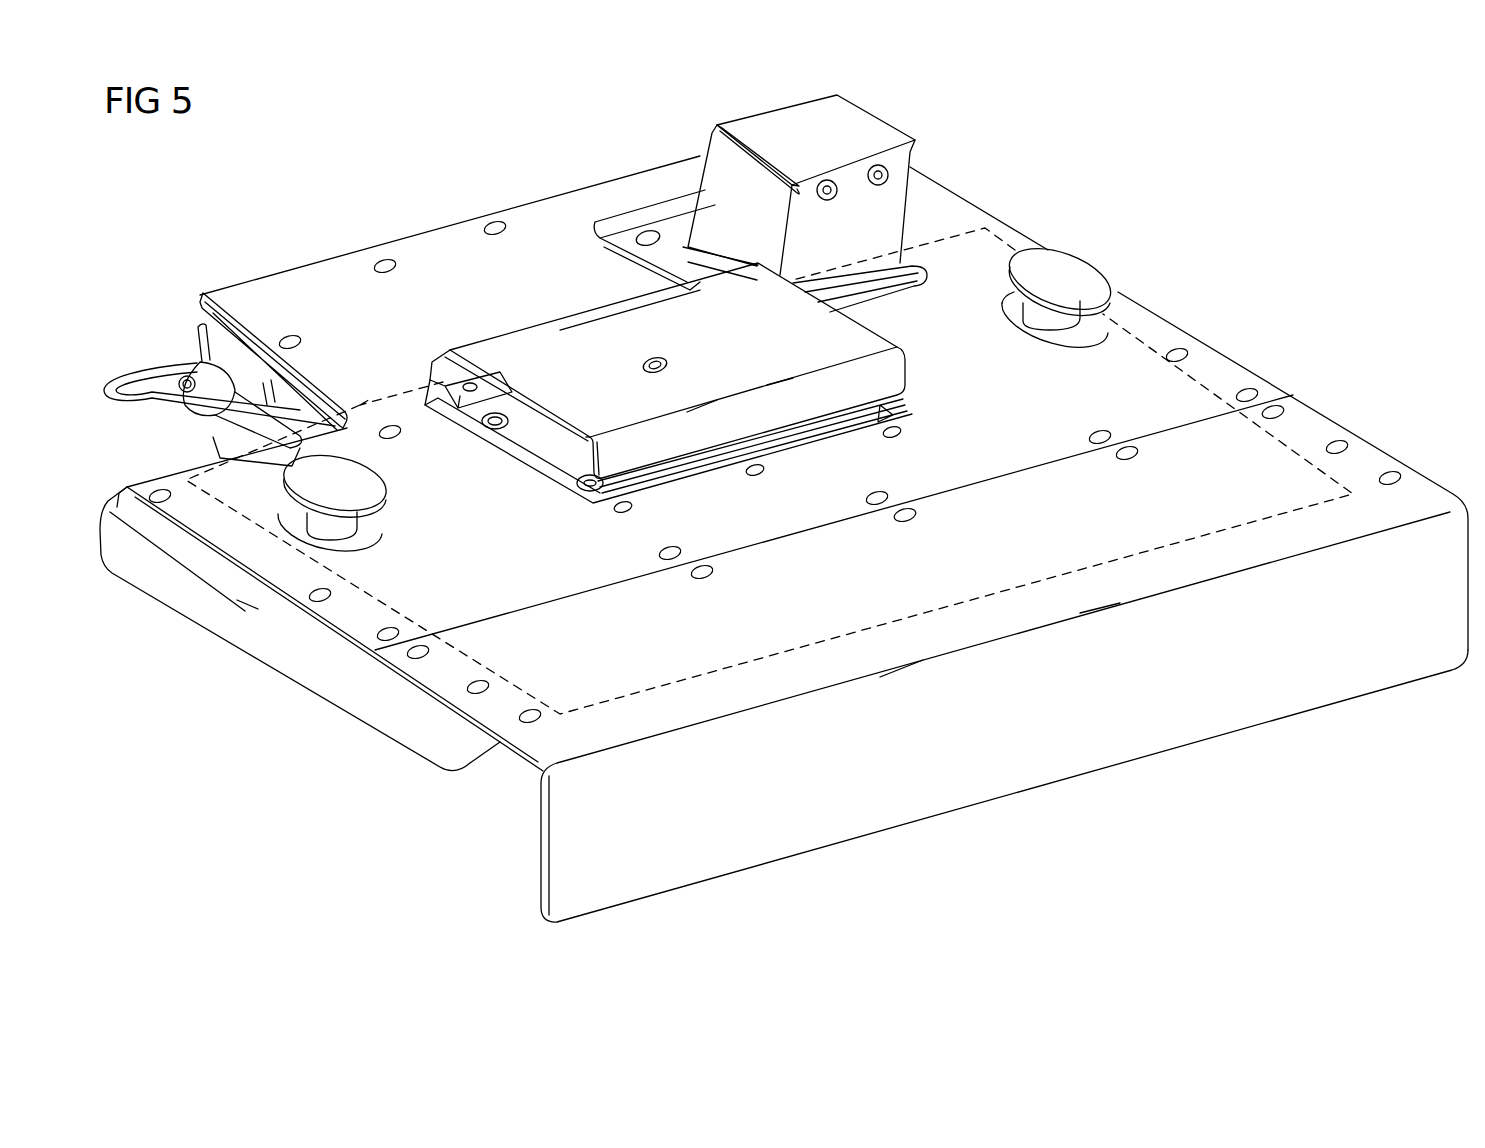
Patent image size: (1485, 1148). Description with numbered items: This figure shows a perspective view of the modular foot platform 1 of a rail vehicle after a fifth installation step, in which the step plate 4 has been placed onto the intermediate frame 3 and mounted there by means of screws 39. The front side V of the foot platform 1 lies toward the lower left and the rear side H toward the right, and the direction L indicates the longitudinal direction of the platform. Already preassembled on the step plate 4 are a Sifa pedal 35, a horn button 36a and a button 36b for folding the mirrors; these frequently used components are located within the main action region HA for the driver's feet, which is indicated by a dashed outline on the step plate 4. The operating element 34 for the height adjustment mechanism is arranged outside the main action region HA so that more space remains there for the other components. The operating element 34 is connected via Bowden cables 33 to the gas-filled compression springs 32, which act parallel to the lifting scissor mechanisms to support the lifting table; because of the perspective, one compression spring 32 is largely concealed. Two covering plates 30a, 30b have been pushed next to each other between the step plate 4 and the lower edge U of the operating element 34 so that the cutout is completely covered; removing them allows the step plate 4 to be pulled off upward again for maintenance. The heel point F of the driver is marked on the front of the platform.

The foot platform 1 is at (1212, 204).
The intermediate frame 3 is at (190, 296).
The step plate 4 is at (1320, 418).
The covering plate 30a is at (660, 215).
The covering plate 30b is at (885, 290).
The gas-filled compression spring 32 is at (208, 418).
The Bowden cable 33 is at (140, 376).
The operating element 34 is at (880, 130).
The Sifa pedal 35 is at (520, 340).
The horn button 36a is at (1085, 278).
The button for folding mirrors 36b is at (375, 490).
The screws 39 is at (410, 652).
The rear side H is at (1165, 738).
The main action region HA is at (1197, 402).
The heel point F is at (966, 650).
The front side V is at (435, 220).
The lower edge U is at (905, 294).
The longitudinal direction L is at (1173, 246).